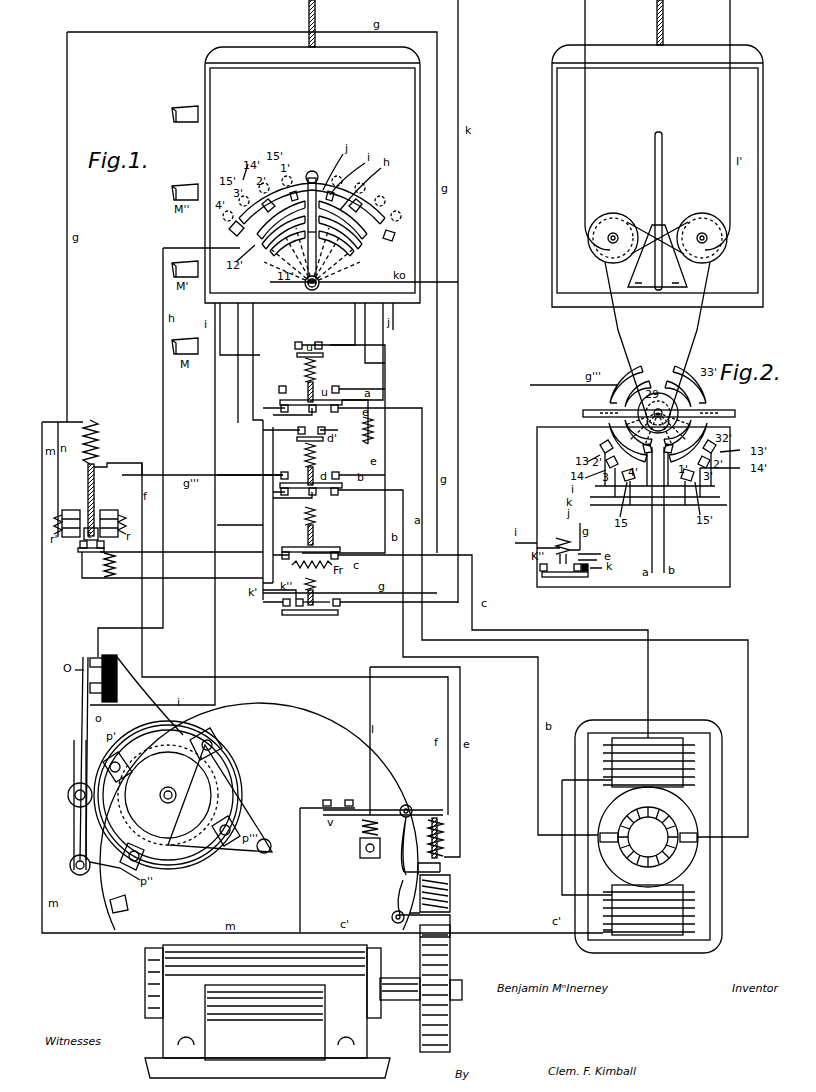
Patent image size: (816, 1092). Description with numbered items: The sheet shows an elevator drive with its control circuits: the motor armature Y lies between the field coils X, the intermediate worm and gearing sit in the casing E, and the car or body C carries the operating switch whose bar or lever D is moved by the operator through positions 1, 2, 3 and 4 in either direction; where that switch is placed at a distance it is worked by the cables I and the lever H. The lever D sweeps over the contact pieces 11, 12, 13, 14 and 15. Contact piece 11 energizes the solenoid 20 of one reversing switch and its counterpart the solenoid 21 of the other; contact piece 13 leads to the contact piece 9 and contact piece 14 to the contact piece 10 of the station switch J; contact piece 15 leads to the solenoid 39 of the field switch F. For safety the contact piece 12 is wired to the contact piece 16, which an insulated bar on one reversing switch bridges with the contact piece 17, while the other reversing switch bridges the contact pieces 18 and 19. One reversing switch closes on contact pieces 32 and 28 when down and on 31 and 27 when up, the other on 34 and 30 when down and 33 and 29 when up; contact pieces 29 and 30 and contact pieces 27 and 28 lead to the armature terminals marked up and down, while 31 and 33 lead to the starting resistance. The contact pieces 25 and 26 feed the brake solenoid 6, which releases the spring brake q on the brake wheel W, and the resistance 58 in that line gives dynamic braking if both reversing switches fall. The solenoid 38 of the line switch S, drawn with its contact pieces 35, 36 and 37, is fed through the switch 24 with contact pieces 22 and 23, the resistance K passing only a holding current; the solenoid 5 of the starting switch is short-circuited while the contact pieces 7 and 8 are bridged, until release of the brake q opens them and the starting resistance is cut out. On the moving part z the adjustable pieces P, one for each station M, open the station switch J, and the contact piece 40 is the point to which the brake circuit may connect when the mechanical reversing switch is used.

In FIG. 1, the contact 1 is at (337, 174).
In FIG. 1, the switch position 2 is at (361, 182).
In FIG. 1, the switch position 3 is at (381, 195).
In FIG. 1, the switch position 4 is at (396, 211).
In FIG. 1, the starting switch solenoid 5 is at (96, 442).
In FIG. 1, the brake solenoid 6 is at (442, 838).
In FIG. 1, the contact piece 7 is at (326, 808).
In FIG. 1, the contact piece 8 is at (350, 808).
In FIG. 1, the contact piece of station switch 9 is at (96, 658).
In FIG. 1, the contact piece of station switch 10 is at (96, 688).
In FIG. 1, the contact piece 11 is at (312, 232).
In FIG. 1, the contact piece 12 is at (360, 245).
In FIG. 1, the contact piece 13 is at (360, 246).
In FIG. 1, the contact piece 14 is at (390, 228).
In FIG. 1, the contact piece 15 is at (375, 228).
In FIG. 1, the contact piece 16 is at (292, 340).
In FIG. 1, the contact piece 17 is at (327, 340).
In FIG. 1, the contact piece 18 is at (298, 432).
In FIG. 1, the contact piece 19 is at (325, 430).
In FIG. 1, the reversing switch solenoid 20 is at (301, 370).
In FIG. 1, the reversing switch solenoid 21 is at (301, 455).
In FIG. 1, the contact piece 22 is at (109, 545).
In FIG. 1, the contact piece 23 is at (162, 565).
In FIG. 1, the switch 24 is at (73, 545).
In FIG. 1, the contact piece 25 is at (305, 498).
In FIG. 1, the contact piece 26 is at (307, 414).
In FIG. 1, the contact piece 27 is at (340, 389).
In FIG. 2, the contact piece 27 is at (661, 410).
In FIG. 1, the contact piece 28 is at (328, 410).
In FIG. 1, the contact piece 29 is at (340, 474).
In FIG. 1, the contact piece 30 is at (329, 492).
In FIG. 1, the contact piece 31 is at (284, 383).
In FIG. 2, the contact piece 31 is at (640, 365).
In FIG. 1, the contact piece 32 is at (288, 414).
In FIG. 1, the contact piece 33 is at (292, 474).
In FIG. 1, the contact piece 34 is at (284, 498).
In FIG. 2, the contact piece 34 is at (608, 430).
In FIG. 1, the contact 35 is at (283, 606).
In FIG. 1, the contact 36 is at (300, 606).
In FIG. 1, the contact 37 is at (337, 606).
In FIG. 1, the line switch solenoid 38 is at (320, 583).
In FIG. 1, the field switch solenoid 39 is at (320, 516).
In FIG. 2, the contact piece 40 is at (580, 577).
In FIG. 1, the resistance 58 is at (374, 428).
In FIG. 1, the car C is at (299, 151).
In FIG. 1, the operating switch bar D is at (312, 225).
In FIG. 1, the casing E is at (259, 816).
In FIG. 1, the field switch F is at (311, 539).
In FIG. 2, the lever H is at (657, 211).
In FIG. 2, the cable I is at (597, 125).
In FIG. 1, the station switch J is at (98, 810).
In FIG. 1, the resistance K is at (115, 565).
In FIG. 1, the station M is at (185, 122).
In FIG. 1, the adjustable piece P is at (210, 743).
In FIG. 1, the line switch S is at (310, 619).
In FIG. 1, the brake wheel W is at (447, 988).
In FIG. 1, the motor field X is at (654, 762).
In FIG. 1, the armature Y is at (642, 800).
In FIG. 1, the moving part z is at (168, 795).
In FIG. 1, the brake q is at (439, 893).